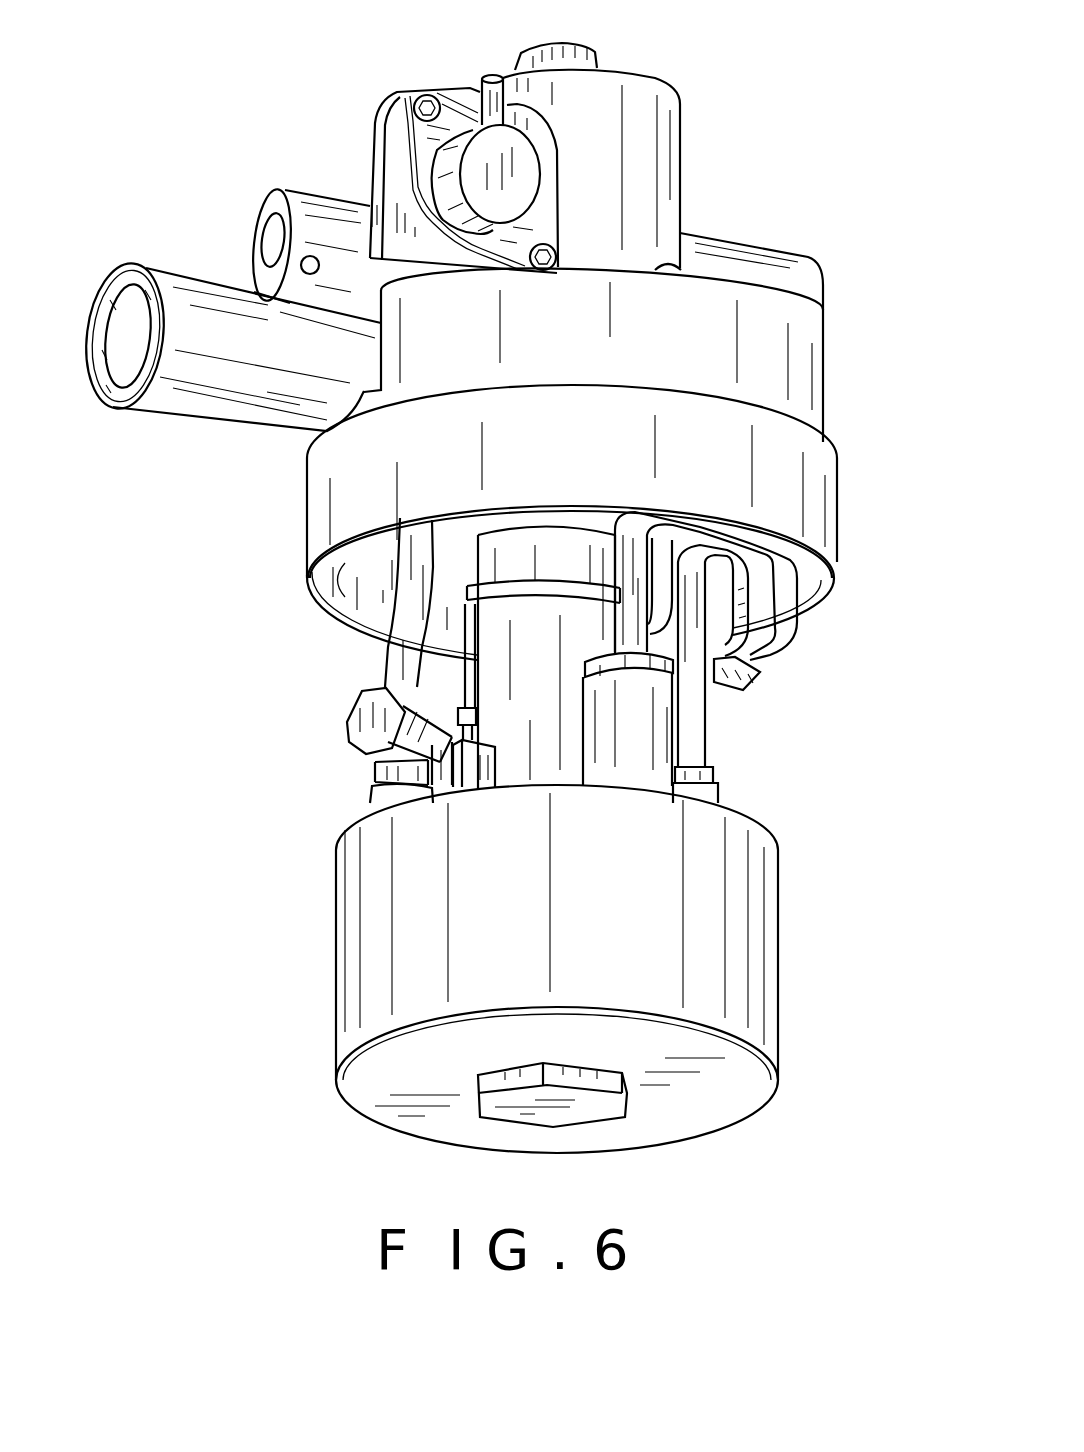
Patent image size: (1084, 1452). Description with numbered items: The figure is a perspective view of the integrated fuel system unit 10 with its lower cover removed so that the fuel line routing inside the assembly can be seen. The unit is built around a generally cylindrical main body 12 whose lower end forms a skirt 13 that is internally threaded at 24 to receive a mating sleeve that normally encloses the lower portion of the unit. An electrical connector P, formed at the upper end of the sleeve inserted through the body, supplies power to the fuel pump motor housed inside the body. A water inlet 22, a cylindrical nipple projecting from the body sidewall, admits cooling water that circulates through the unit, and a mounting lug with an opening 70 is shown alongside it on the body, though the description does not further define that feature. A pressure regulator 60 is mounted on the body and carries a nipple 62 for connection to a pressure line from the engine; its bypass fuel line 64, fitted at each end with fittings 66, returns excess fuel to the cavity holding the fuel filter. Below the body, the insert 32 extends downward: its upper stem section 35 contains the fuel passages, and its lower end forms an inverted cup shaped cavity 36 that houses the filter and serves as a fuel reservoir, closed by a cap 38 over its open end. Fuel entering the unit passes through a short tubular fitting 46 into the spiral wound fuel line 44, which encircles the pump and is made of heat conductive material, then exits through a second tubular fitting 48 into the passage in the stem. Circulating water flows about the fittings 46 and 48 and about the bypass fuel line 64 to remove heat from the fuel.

The integrated fuel system unit 10 is at (228, 88).
The electrical connector P is at (596, 44).
The main body 12 is at (838, 380).
The skirt 13 is at (838, 528).
The water inlet 22 is at (188, 270).
The internal threads 24 is at (313, 600).
The insert 32 is at (322, 811).
The upper stem section 35 is at (580, 676).
The cavity 36 is at (512, 915).
The cap 38 is at (362, 1118).
The spiral wound fuel line 44 is at (440, 553).
The tubular fitting 46 is at (753, 684).
The tubular fitting 48 is at (677, 719).
The pressure regulator 60 is at (400, 140).
The nipple 62 is at (480, 90).
The bypass fuel line 64 is at (387, 652).
The fittings 66 is at (371, 788).
The mounting hole 70 is at (266, 228).